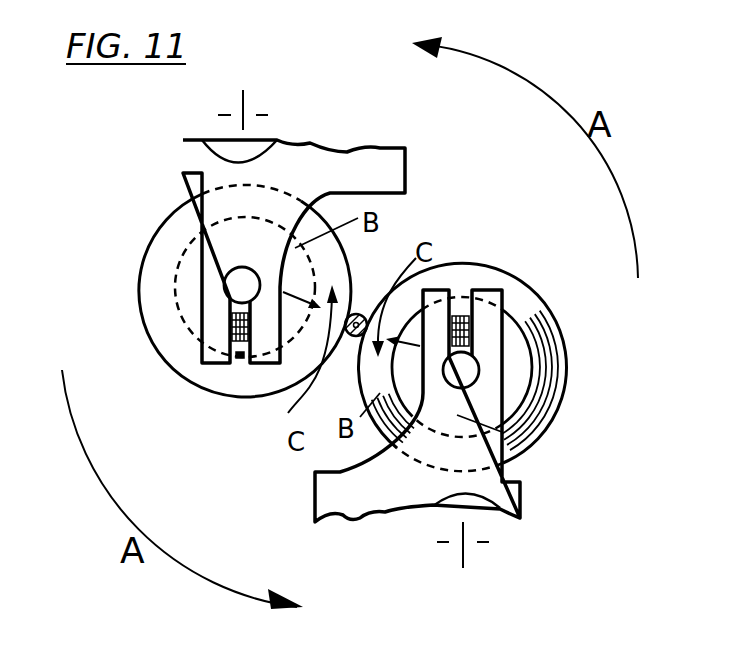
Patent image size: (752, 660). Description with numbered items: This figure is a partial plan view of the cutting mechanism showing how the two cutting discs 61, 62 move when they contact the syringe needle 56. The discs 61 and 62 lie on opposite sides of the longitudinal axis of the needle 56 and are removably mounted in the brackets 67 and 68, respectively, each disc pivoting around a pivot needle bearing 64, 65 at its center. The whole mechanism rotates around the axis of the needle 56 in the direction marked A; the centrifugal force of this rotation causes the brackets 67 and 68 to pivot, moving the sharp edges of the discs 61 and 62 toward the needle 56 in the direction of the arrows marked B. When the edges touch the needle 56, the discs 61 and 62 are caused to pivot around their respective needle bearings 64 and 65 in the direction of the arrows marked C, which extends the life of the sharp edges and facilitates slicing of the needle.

The needle 56 is at (364, 314).
The cutting disc 61 is at (146, 288).
The cutting disc 62 is at (553, 358).
The pivot needle bearing 64 is at (244, 292).
The pivot needle bearing 65 is at (460, 366).
The bracket 67 is at (227, 203).
The bracket 68 is at (520, 447).